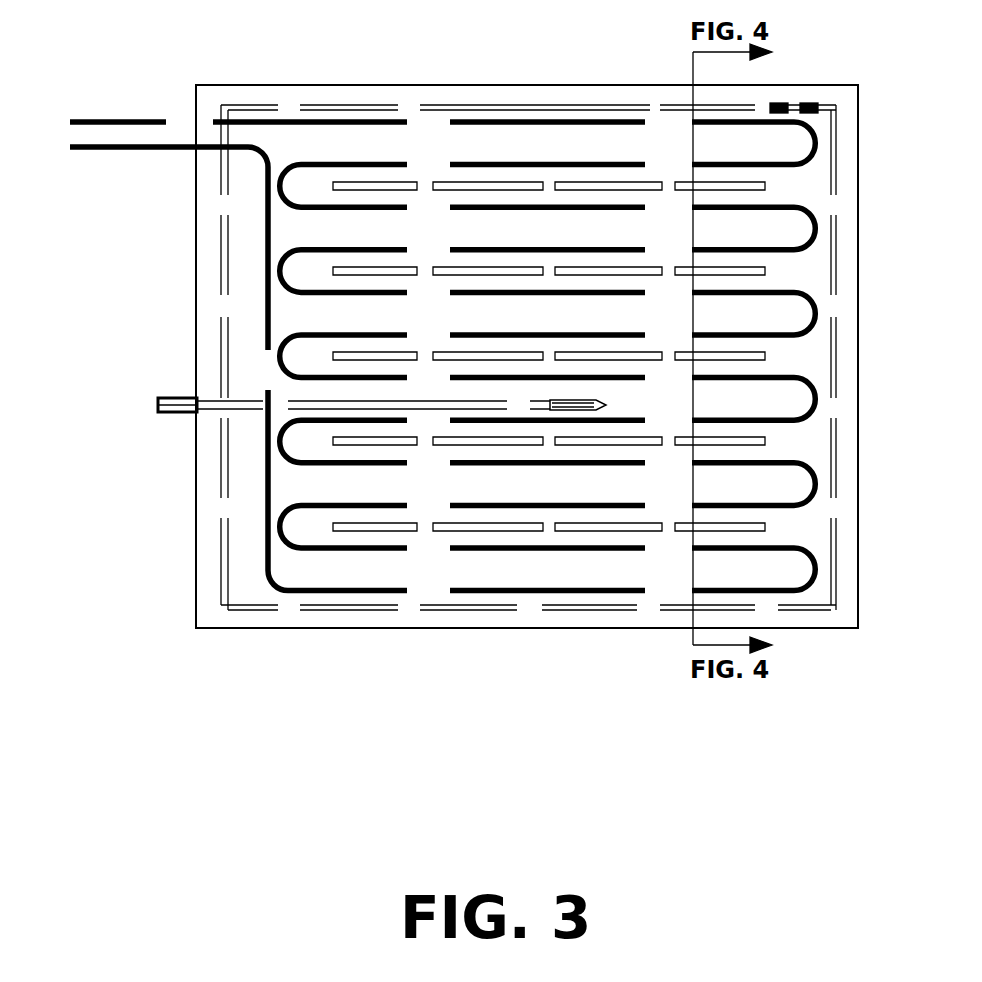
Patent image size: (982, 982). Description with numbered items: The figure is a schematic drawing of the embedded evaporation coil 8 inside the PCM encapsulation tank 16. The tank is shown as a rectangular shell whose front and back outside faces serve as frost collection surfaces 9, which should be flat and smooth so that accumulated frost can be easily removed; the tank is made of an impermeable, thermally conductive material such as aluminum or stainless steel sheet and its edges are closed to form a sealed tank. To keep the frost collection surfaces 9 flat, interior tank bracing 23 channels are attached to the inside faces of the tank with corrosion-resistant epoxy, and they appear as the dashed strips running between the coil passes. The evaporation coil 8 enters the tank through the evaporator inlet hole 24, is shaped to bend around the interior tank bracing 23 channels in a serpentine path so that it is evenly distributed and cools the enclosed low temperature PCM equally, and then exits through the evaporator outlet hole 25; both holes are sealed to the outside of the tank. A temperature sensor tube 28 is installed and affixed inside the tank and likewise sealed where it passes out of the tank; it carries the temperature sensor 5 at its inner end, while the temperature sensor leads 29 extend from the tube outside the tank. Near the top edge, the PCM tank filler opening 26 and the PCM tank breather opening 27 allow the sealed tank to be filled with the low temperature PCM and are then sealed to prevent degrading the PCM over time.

The PCM encapsulation tank 16 is at (196, 86).
The frost collection surface 9 is at (465, 105).
The evaporator inlet hole 24 is at (97, 121).
The evaporator outlet hole 25 is at (92, 148).
The evaporation coil 8 is at (266, 283).
The interior tank bracing 23 is at (500, 530).
The temperature sensor tube 28 is at (250, 401).
The temperature sensor leads 29 is at (158, 404).
The temperature sensor 5 is at (557, 412).
The PCM tank filler opening 26 is at (778, 101).
The PCM tank breather opening 27 is at (811, 101).